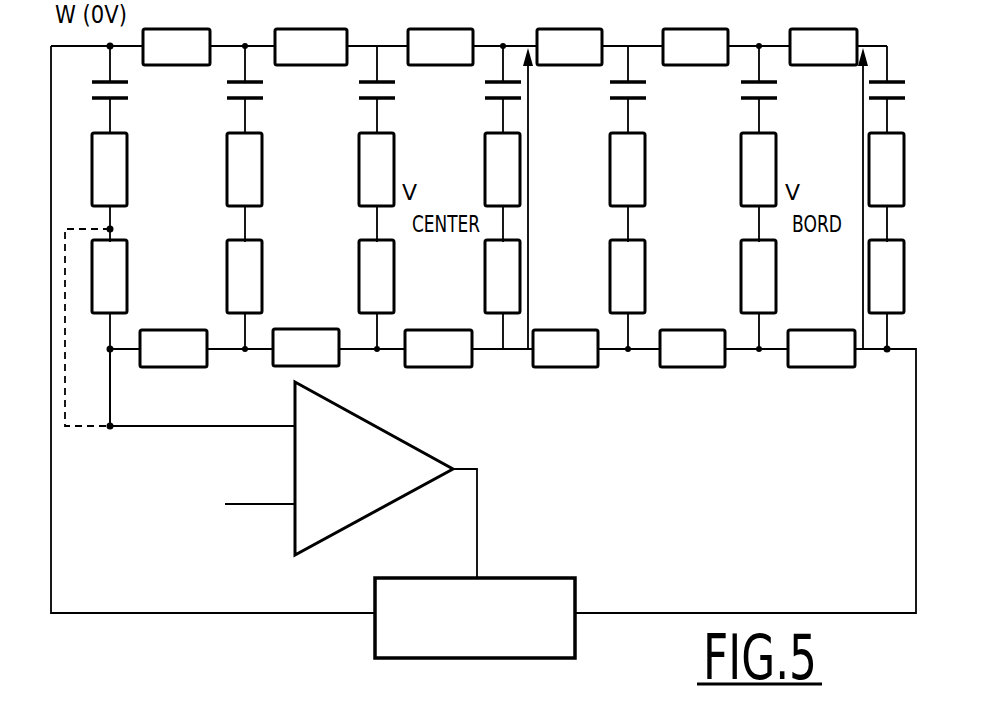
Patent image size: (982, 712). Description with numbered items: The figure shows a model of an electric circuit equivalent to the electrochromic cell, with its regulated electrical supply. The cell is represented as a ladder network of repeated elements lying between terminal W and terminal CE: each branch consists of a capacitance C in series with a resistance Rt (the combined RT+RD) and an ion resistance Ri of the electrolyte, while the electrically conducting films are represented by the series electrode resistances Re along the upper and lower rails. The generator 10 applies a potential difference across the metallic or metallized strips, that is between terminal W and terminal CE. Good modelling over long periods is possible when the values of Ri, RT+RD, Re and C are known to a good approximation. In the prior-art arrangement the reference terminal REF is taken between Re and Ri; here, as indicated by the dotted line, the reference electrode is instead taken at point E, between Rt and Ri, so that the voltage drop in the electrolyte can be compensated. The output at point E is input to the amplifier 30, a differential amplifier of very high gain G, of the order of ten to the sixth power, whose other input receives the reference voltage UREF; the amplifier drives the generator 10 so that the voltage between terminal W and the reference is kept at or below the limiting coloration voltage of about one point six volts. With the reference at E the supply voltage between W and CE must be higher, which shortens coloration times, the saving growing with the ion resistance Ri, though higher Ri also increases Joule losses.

The amplifier 30 is at (402, 441).
The generator 10 is at (531, 650).
The electrode resistance Re is at (175, 198).
The capacitance C is at (119, 97).
The resistance RT+RD Rt is at (140, 169).
The point E is at (97, 319).
The ion resistance Ri is at (122, 276).
The reference terminal REF is at (130, 387).
The terminal CE is at (880, 365).
The reference voltage UREF is at (233, 508).